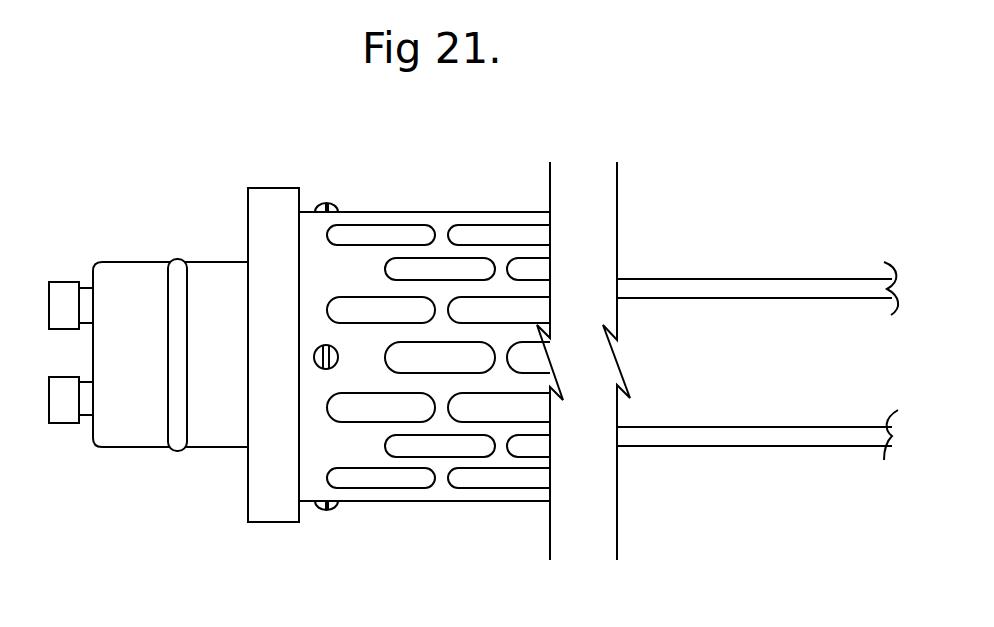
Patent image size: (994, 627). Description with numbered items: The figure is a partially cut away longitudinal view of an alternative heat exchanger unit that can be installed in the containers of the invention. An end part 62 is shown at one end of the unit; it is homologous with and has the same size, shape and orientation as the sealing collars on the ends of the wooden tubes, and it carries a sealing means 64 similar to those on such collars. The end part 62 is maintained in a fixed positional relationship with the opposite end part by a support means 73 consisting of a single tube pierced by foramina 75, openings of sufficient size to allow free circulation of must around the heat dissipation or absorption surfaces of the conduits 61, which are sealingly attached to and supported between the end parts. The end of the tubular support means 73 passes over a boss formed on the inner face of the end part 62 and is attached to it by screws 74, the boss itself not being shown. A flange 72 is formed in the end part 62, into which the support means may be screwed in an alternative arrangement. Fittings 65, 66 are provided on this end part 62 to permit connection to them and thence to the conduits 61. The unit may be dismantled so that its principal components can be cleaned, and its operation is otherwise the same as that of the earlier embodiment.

The conduits 61 is at (714, 287).
The end parts 62 is at (222, 403).
The sealing means 64 is at (173, 270).
The fitting 65 is at (65, 403).
The fitting 66 is at (63, 293).
The flange 72 is at (273, 510).
The support means 73 is at (442, 223).
The screws 74 is at (331, 203).
The foramina 75 is at (437, 447).